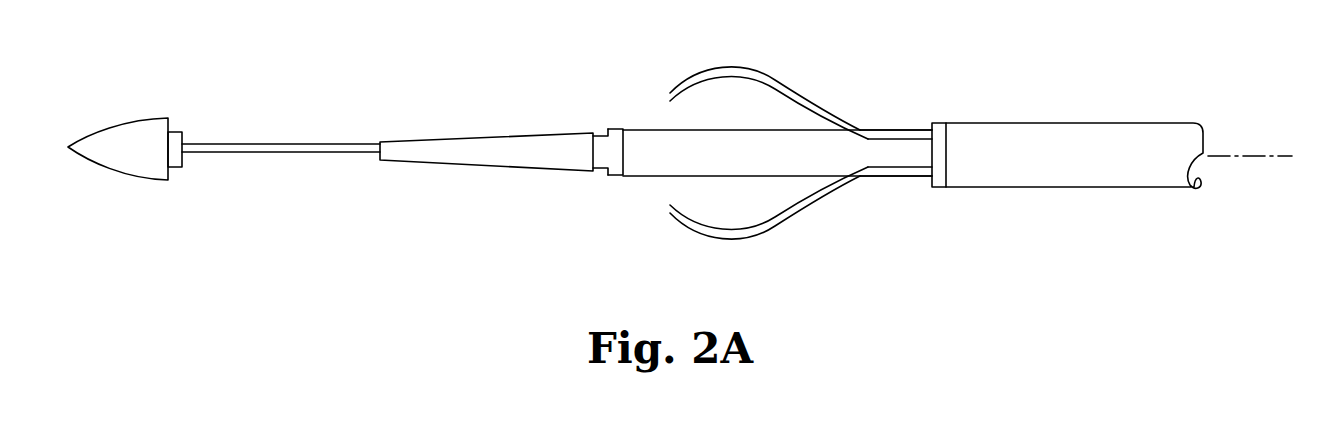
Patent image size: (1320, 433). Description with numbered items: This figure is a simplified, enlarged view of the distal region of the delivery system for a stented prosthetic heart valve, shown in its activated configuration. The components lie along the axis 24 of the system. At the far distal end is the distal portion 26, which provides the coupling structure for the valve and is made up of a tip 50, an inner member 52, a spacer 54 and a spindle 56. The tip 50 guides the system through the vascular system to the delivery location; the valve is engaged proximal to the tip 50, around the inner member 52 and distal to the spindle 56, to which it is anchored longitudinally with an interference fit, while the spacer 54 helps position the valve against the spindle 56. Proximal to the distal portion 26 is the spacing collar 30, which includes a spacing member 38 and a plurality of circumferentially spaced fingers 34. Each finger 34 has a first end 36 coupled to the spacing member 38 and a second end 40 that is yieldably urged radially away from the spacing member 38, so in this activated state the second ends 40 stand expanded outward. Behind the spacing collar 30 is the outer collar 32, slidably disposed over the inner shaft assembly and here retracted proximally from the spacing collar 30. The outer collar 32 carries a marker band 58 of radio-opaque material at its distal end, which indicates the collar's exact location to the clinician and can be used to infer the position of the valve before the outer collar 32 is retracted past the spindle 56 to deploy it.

The axis 24 is at (1258, 165).
The distal portion 26 is at (315, 270).
The spacing collar 30 is at (763, 172).
The outer collar 32 is at (1064, 190).
The fingers 34 is at (780, 76).
The first end 36 is at (898, 128).
The spacing member 38 is at (777, 153).
The second end 40 is at (668, 87).
The tip 50 is at (148, 169).
The inner member 52 is at (278, 155).
The spacer 54 is at (474, 136).
The spindle 56 is at (607, 126).
The marker band 58 is at (940, 188).